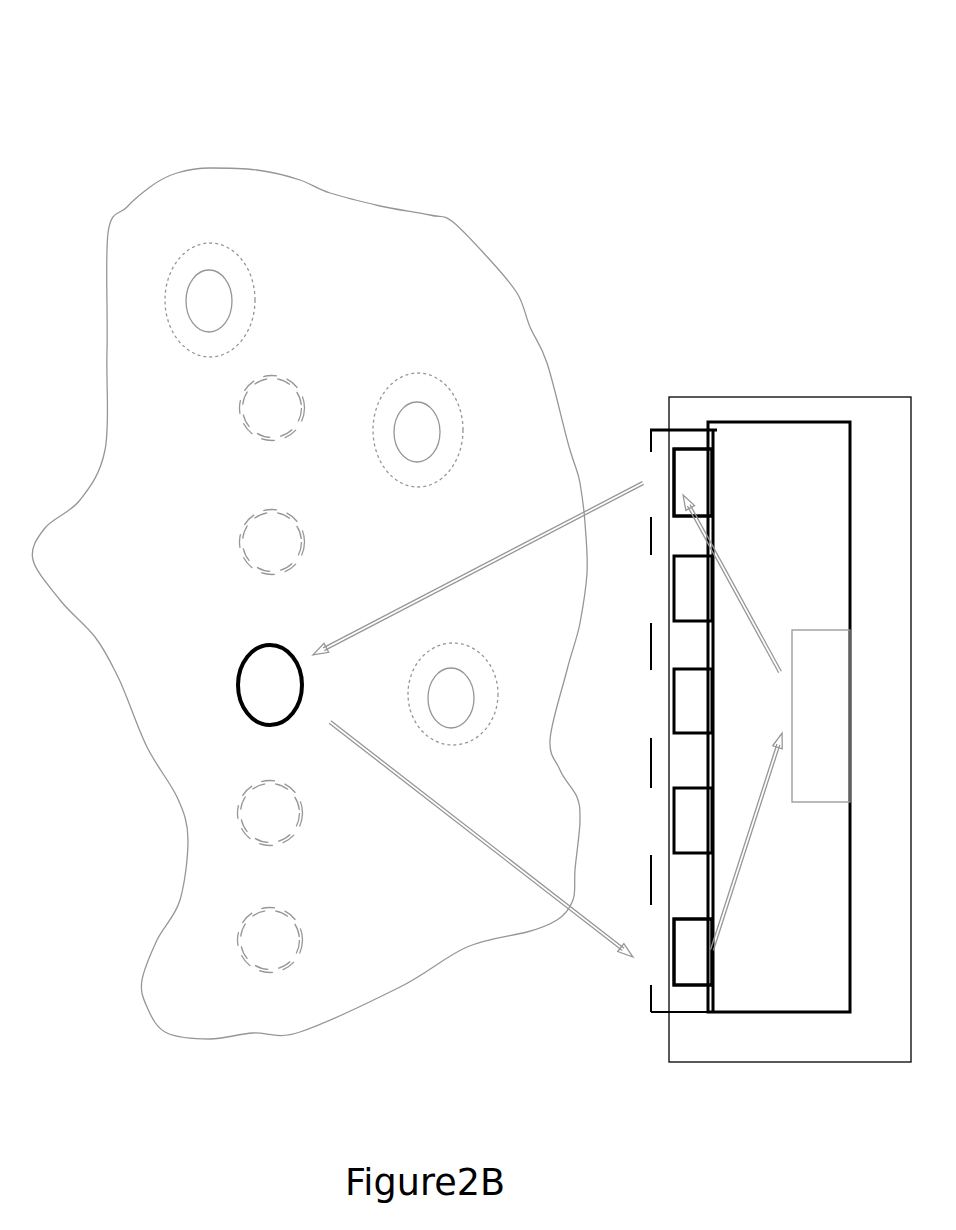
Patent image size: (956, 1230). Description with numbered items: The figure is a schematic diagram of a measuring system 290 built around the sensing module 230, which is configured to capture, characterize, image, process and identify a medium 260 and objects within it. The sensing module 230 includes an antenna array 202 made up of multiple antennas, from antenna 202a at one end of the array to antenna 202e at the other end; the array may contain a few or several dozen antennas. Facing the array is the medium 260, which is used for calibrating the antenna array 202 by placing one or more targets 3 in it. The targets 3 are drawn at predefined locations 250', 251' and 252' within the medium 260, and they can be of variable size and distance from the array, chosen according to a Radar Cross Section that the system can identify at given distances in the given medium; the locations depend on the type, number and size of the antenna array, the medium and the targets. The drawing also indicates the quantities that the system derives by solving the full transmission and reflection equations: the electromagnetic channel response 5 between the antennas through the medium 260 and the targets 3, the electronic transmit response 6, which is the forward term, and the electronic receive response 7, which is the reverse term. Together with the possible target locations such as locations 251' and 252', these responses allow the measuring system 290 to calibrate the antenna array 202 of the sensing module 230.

The measuring system 290 is at (707, 61).
The medium 260 is at (430, 215).
The targets 3 is at (232, 300).
The predefined location 250' is at (199, 333).
The predefined location 251' is at (396, 435).
The predefined location 252' is at (423, 694).
The electromagnetic channel response 5 is at (478, 568).
The antenna array 202 is at (685, 428).
The antenna 202e is at (676, 460).
The antenna 202a is at (674, 935).
The electronic transmit response 6 is at (750, 837).
The electronic receive response 7 is at (750, 610).
The sensing module 230 is at (790, 1062).